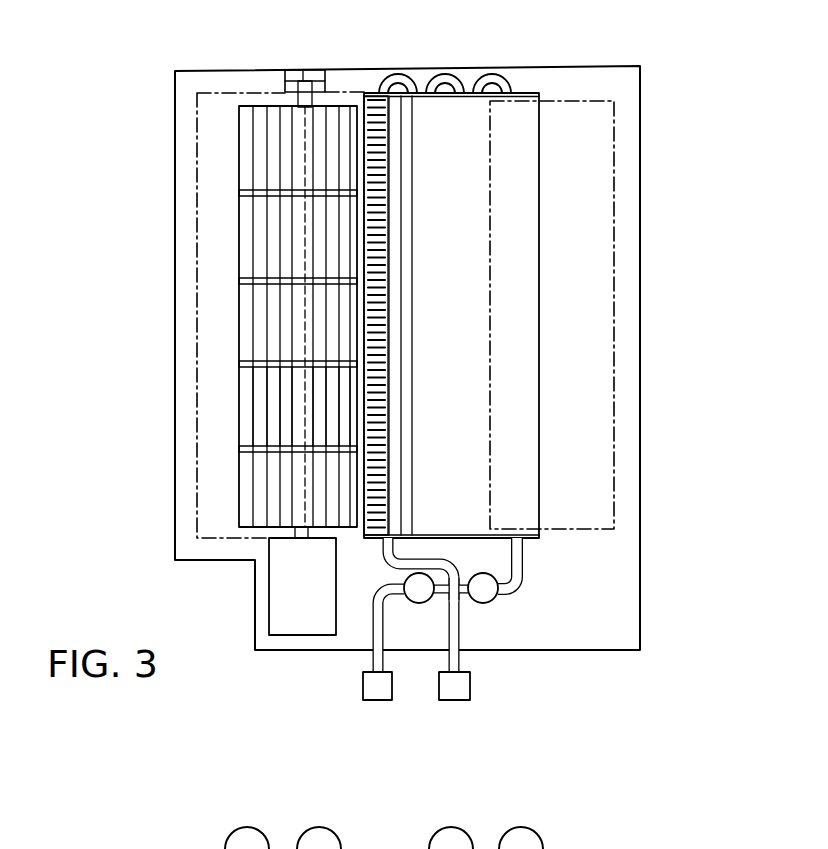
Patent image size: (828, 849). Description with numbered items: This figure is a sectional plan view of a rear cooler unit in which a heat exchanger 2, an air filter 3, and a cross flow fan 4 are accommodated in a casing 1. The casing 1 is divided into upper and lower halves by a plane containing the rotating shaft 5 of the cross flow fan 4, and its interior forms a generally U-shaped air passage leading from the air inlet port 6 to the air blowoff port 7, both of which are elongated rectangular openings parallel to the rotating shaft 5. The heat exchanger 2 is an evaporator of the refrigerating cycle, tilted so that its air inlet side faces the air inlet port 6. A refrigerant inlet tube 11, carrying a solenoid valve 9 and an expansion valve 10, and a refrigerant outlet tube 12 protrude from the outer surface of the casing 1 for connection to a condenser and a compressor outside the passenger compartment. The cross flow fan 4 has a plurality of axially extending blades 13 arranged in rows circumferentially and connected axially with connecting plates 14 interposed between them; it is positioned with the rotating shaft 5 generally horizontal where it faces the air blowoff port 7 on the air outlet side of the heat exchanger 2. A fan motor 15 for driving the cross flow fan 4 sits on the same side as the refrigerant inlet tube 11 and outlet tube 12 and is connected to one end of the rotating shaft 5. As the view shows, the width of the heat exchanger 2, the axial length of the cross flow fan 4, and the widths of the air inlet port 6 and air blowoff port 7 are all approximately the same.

The casing 1 is at (640, 115).
The heat exchanger 2 is at (373, 92).
The air filter 3 is at (421, 110).
The cross flow fan 4 is at (229, 270).
The rotating shaft 5 is at (303, 67).
The air inlet port 6 is at (614, 235).
The air blowoff port 7 is at (197, 263).
The solenoid valve 9 is at (419, 603).
The expansion valve 10 is at (487, 592).
The refrigerant inlet tube 11 is at (365, 663).
The refrigerant outlet tube 12 is at (458, 657).
The blades 13 is at (250, 413).
The connecting plates 14 is at (257, 370).
The fan motor 15 is at (268, 605).